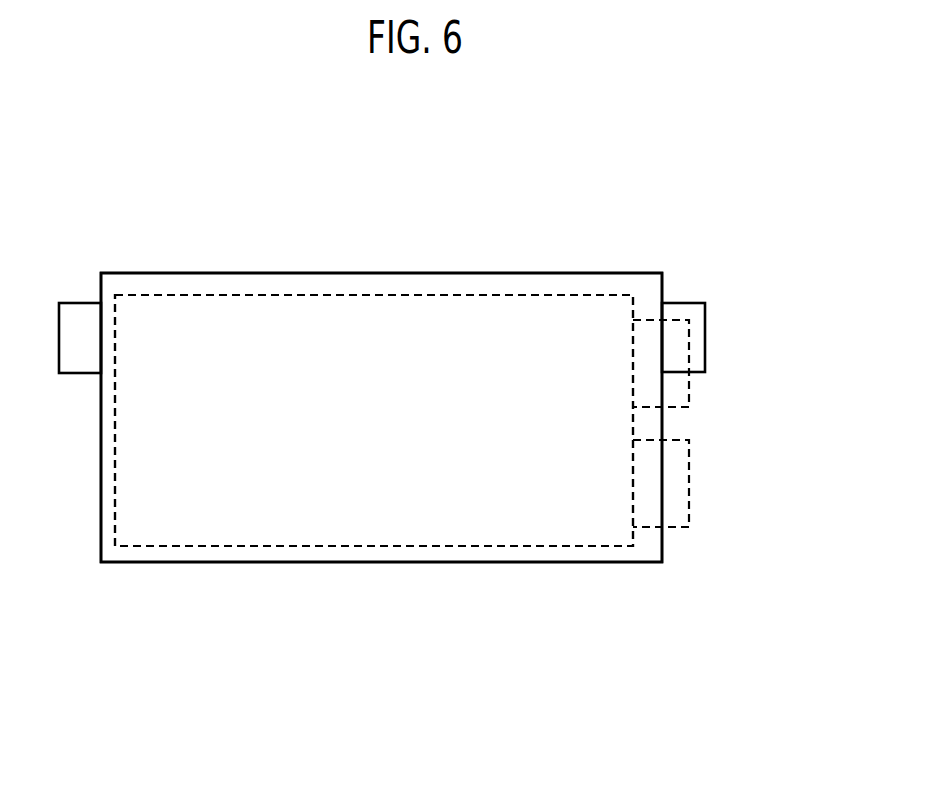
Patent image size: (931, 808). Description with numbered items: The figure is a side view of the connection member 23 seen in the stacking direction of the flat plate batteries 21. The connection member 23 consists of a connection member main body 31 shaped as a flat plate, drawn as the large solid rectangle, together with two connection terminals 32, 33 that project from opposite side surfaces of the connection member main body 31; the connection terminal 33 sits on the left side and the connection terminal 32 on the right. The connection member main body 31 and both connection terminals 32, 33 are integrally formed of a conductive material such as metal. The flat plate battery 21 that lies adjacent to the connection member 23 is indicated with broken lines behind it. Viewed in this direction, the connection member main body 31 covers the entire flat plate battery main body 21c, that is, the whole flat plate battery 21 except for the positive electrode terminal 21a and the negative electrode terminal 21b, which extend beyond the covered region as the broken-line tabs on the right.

The flat plate battery 21 is at (223, 546).
The positive electrode terminal 21a is at (680, 527).
The negative electrode terminal 21b is at (689, 392).
The flat plate battery main body 21c is at (378, 546).
The connection member 23 is at (507, 273).
The connection member main body 31 is at (334, 273).
The connection terminal 32 is at (694, 303).
The connection terminal 33 is at (72, 303).